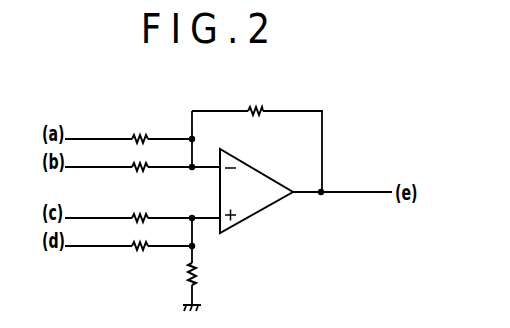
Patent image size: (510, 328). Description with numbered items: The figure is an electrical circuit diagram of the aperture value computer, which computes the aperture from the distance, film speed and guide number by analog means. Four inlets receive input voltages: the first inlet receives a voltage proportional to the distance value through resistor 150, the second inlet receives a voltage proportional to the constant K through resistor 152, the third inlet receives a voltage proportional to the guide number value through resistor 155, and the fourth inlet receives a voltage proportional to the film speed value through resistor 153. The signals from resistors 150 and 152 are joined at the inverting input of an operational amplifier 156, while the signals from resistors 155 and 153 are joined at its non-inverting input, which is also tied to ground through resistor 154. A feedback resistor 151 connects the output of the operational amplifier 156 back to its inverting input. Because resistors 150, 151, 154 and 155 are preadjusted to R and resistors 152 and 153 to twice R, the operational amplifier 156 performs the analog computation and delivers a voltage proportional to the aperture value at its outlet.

The resistor 150 is at (142, 135).
The resistor 151 is at (257, 106).
The resistor 152 is at (143, 170).
The resistor 153 is at (140, 255).
The resistor 154 is at (199, 270).
The resistor 155 is at (140, 213).
The operational amplifier 156 is at (266, 177).